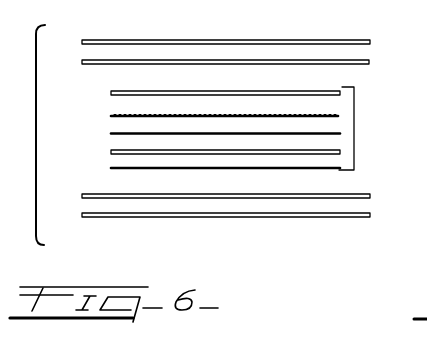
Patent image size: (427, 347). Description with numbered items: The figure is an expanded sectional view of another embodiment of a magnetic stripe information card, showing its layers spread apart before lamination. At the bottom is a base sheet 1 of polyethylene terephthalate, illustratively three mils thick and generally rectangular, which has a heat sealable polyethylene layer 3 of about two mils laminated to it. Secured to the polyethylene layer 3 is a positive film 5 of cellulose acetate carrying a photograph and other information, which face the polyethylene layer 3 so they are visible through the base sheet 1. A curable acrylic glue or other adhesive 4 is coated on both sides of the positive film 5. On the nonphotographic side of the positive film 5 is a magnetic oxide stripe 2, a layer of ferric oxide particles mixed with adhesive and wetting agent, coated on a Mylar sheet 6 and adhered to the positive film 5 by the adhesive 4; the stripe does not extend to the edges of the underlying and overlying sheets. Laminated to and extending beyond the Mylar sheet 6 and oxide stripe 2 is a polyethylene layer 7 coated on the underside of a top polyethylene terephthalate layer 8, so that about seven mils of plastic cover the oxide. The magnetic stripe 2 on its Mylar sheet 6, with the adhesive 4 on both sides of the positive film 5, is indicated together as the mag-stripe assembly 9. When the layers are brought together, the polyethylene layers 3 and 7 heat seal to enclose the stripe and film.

The base sheet 1 is at (363, 220).
The magnetic oxide stripe 2 is at (330, 114).
The polyethylene heat sealable layer 3 is at (370, 197).
The adhesive 4 is at (340, 134).
The positive film 5 is at (340, 152).
The Mylar sheet 6 is at (336, 84).
The polyethylene layer 7 is at (365, 62).
The polyethylene terephthalate layer 8 is at (362, 40).
The mag-stripe assembly 9 is at (354, 117).